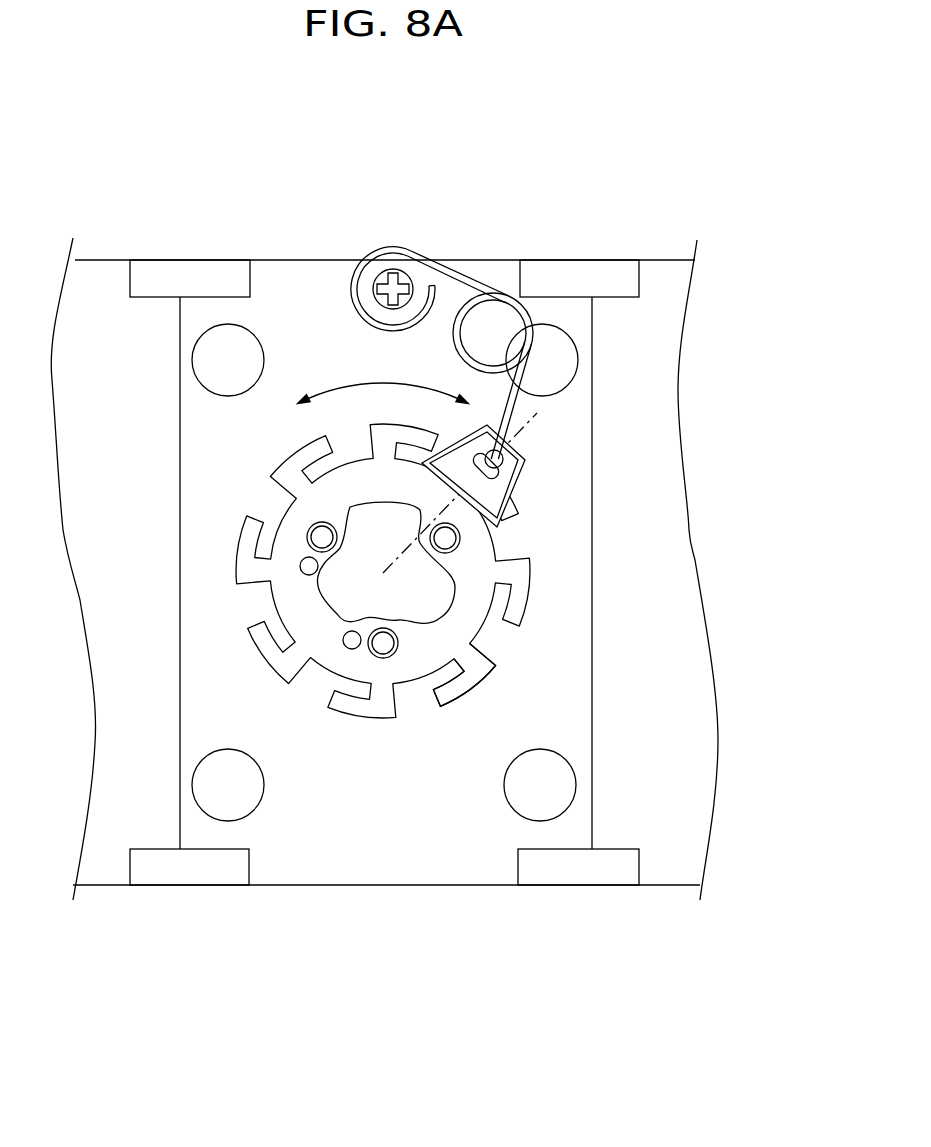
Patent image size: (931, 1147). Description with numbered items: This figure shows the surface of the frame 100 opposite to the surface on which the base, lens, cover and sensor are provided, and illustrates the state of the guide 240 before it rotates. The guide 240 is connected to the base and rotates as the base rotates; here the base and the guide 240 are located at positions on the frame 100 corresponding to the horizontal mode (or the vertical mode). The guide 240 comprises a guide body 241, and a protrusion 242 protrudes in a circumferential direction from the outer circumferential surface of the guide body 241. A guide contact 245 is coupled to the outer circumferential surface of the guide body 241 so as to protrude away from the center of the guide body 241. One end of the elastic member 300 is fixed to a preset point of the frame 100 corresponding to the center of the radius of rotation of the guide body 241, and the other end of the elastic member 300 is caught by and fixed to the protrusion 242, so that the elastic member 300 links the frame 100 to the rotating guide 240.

The frame 100 is at (393, 795).
The guide 240 is at (541, 550).
The guide body 241 is at (483, 578).
The protrusion 242 is at (503, 493).
The guide contact 245 is at (460, 692).
The elastic member 300 is at (497, 296).